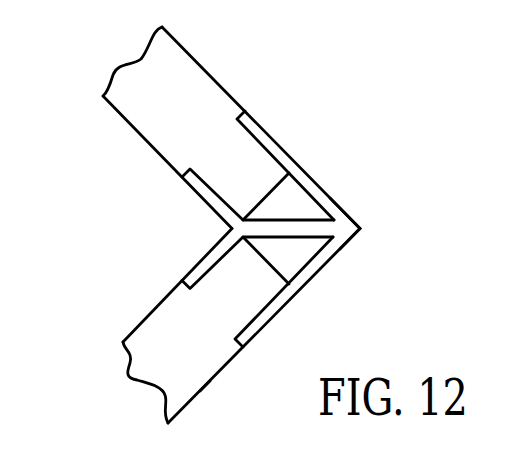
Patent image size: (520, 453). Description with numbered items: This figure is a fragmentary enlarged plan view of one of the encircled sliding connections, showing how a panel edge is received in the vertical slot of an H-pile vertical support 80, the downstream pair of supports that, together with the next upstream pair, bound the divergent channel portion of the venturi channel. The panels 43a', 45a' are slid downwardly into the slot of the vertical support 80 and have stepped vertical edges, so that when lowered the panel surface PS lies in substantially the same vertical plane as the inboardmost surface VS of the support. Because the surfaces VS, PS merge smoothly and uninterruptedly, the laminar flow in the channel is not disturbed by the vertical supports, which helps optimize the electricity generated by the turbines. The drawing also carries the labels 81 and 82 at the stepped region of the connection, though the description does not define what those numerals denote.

The vertical support 80 is at (333, 182).
The first adhesive/fastening strip 81 is at (247, 130).
The second adhesive/fastening strip 82 is at (248, 324).
The panel 43a' is at (231, 127).
The panel 45a' is at (193, 326).
The inboardmost surface VS is at (320, 268).
The panel surface PS is at (216, 376).